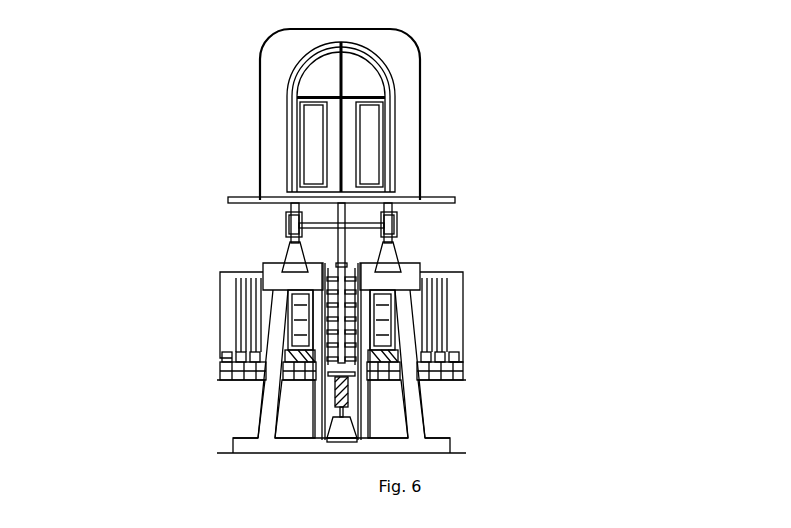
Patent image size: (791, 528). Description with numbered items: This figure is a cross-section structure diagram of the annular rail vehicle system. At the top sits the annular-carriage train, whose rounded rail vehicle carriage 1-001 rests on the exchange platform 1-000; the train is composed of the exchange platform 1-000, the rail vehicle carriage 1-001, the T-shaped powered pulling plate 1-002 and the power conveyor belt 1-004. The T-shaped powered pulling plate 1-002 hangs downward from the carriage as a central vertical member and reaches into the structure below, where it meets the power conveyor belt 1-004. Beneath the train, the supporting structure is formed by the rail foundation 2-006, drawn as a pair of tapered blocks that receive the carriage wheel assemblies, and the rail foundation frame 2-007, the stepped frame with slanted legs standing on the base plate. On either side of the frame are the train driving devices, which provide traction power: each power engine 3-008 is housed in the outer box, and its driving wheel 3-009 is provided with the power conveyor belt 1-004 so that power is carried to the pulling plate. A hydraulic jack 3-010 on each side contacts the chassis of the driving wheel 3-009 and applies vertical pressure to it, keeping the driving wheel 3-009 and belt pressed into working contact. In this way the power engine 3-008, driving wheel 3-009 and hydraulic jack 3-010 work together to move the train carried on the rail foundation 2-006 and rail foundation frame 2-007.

The exchange platform 1-000 is at (450, 195).
The rail vehicle carriage 1-001 is at (407, 123).
The T-shaped powered pulling plate 1-002 is at (338, 262).
The power conveyor belt 1-004 is at (326, 272).
The rail foundation 2-006 is at (387, 262).
The rail foundation frame 2-007 is at (403, 285).
The power engine 3-008 is at (450, 325).
The driving wheel 3-009 is at (330, 282).
The hydraulic jack 3-010 is at (297, 310).